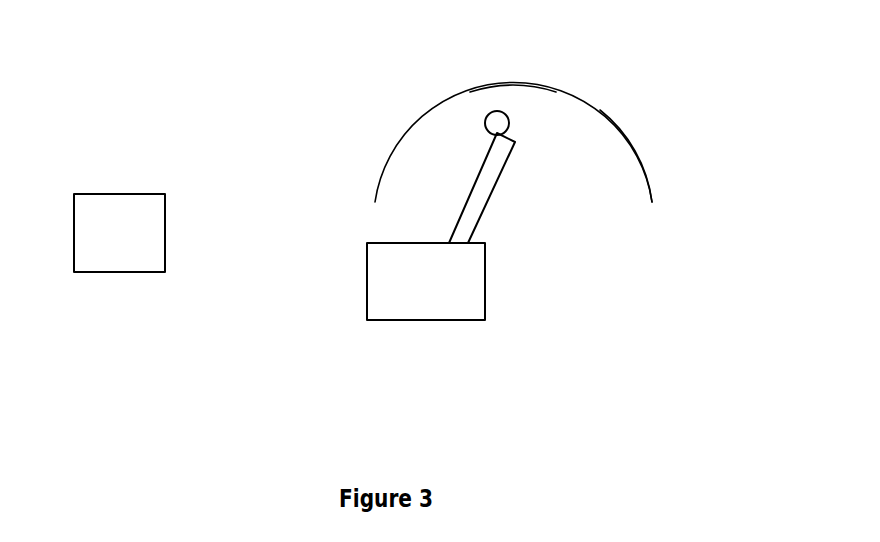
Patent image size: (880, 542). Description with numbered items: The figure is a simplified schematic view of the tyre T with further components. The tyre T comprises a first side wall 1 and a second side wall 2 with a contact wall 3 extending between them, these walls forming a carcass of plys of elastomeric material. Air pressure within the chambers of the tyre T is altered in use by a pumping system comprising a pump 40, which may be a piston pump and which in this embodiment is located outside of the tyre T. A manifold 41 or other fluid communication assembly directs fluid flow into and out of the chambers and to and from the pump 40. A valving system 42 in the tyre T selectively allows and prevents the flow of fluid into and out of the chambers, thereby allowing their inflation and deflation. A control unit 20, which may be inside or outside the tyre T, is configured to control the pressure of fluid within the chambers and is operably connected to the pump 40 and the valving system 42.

The tyre T is at (638, 83).
The first side wall 1 is at (380, 173).
The second side wall 2 is at (650, 180).
The contact wall 3 is at (508, 85).
The control unit 20 is at (74, 248).
The pump 40 is at (455, 320).
The manifold 41 is at (492, 197).
The valving system 42 is at (488, 114).